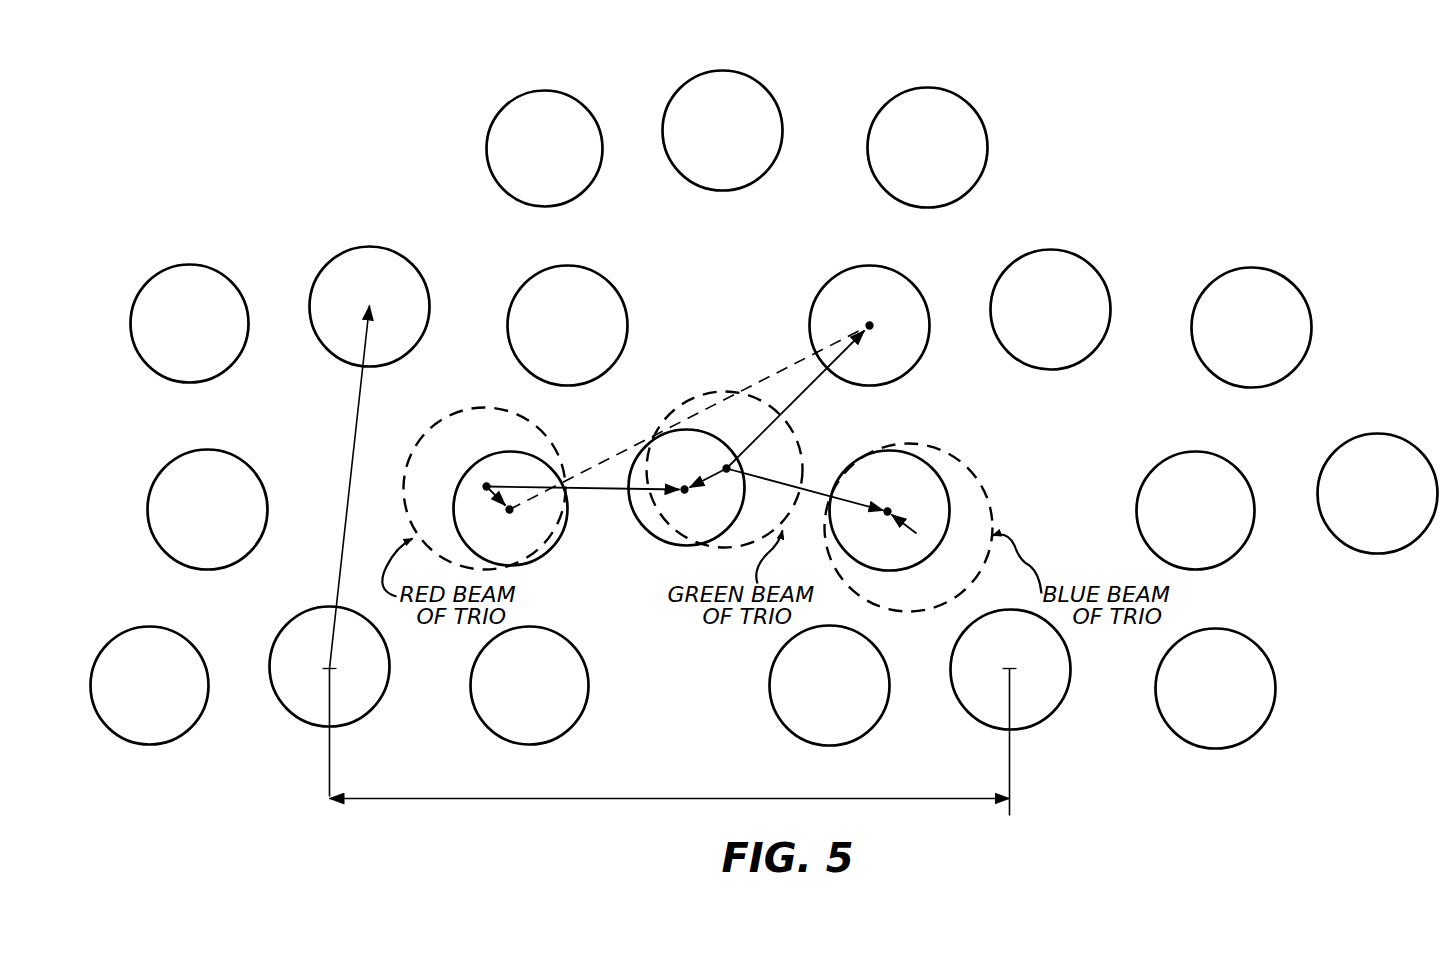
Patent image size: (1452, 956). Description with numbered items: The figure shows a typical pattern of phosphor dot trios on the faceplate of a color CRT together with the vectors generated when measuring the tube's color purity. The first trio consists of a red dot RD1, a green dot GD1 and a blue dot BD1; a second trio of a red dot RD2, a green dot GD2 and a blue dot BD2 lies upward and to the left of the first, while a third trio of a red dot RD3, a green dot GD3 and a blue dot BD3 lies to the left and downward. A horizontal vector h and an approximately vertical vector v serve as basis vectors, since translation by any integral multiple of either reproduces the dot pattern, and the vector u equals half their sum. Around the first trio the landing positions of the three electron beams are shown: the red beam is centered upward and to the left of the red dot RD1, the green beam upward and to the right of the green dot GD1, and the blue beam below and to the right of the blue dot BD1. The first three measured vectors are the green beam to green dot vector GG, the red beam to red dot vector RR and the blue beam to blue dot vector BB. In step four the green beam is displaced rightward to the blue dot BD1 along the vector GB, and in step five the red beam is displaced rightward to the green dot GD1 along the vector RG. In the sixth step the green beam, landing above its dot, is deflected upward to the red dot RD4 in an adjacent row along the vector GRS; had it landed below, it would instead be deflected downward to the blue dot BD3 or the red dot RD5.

The red dot RD1 is at (524, 565).
The green dot GD1 is at (641, 540).
The blue dot BD1 is at (927, 463).
The red dot RD2 is at (182, 267).
The green dot GD2 is at (397, 230).
The blue dot BD2 is at (588, 268).
The red dot RD3 is at (152, 743).
The green dot GD3 is at (330, 727).
The blue dot BD3 is at (513, 745).
The red dot RD4 is at (858, 268).
The red dot RD5 is at (845, 743).
The red beam to red dot vector RR is at (487, 500).
The green beam to green dot vector GG is at (710, 457).
The blue beam to blue dot vector BB is at (940, 500).
The red beam to green dot vector RG is at (615, 468).
The green beam to blue dot vector GB is at (812, 462).
The green beam to red dot shift vector GRS is at (857, 390).
The vector u is at (783, 373).
The approximately vertical vector v is at (368, 465).
The horizontal vector h is at (782, 762).